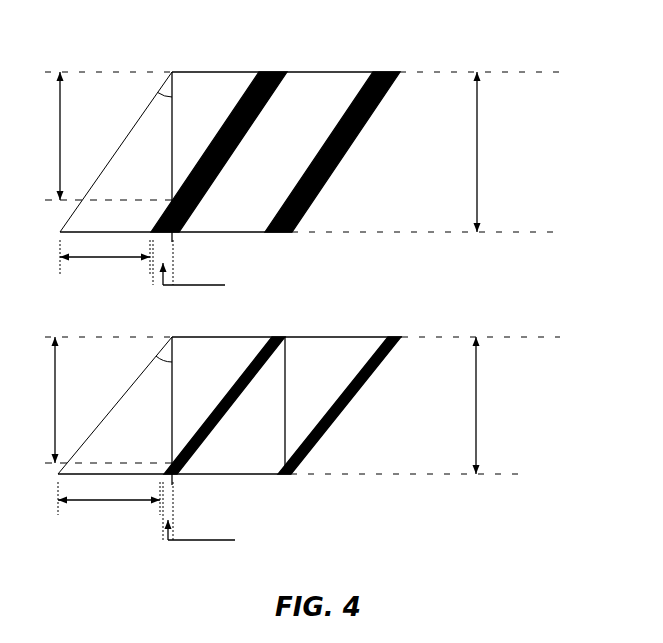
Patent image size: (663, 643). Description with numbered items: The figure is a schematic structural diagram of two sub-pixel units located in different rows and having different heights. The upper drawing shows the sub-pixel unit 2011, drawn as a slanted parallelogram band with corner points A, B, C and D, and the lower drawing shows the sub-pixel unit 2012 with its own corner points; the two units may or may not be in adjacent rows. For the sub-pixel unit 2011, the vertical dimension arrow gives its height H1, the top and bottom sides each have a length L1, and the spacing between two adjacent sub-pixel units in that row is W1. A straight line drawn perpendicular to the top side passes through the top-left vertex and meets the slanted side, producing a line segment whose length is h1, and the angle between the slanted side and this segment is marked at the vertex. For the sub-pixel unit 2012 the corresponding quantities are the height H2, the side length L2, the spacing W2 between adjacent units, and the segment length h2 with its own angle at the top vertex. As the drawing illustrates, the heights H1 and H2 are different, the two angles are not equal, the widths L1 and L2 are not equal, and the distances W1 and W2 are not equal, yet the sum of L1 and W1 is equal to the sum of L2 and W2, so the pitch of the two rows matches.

The sub-pixel unit 2011 is at (294, 129).
The sub-pixel unit 2012 is at (292, 385).
The length of line segment A1K1 h1 is at (45, 136).
The height of the sub-pixel unit 2011 H1 is at (496, 152).
The length of the top side A1D1 and bottom side B1C1 L1 is at (105, 263).
The distance between two adjacent sub-pixel units W1 is at (189, 262).
The length of line segment A2K2 h2 is at (39, 400).
The height of the sub-pixel unit 2012 H2 is at (496, 405).
The length of the top side A2D2 and bottom side B2C2 L2 is at (109, 505).
The distance between two adjacent sub-pixel units W2 is at (199, 511).